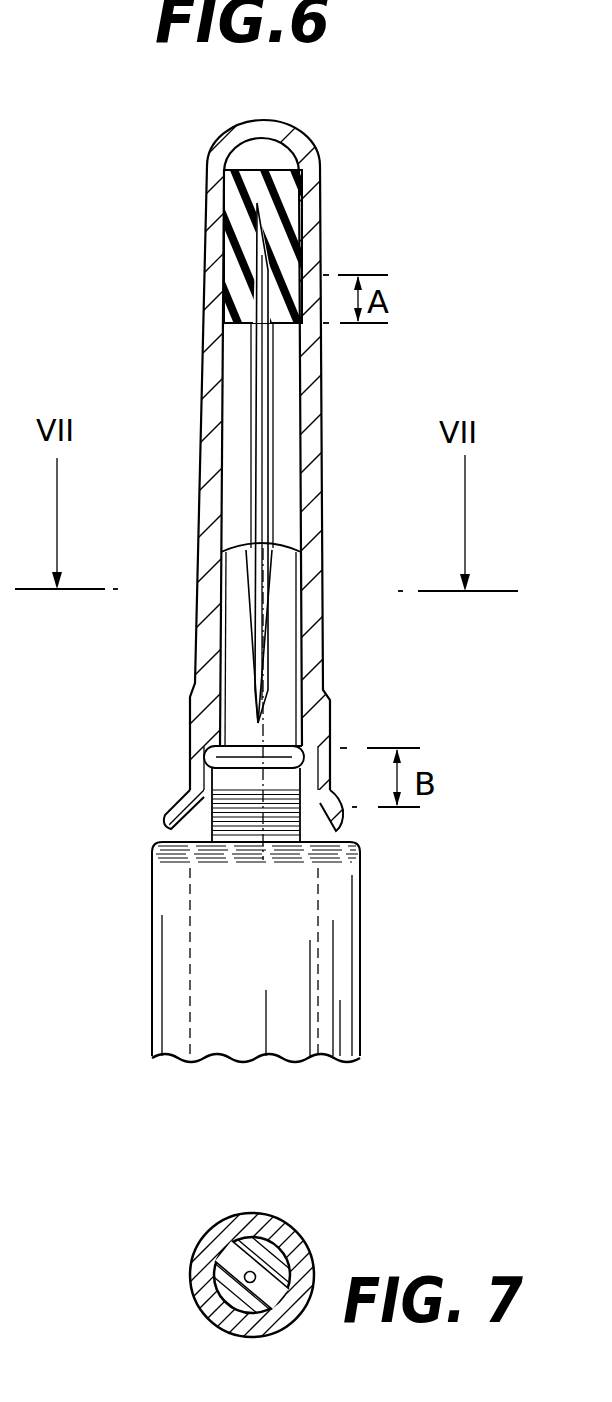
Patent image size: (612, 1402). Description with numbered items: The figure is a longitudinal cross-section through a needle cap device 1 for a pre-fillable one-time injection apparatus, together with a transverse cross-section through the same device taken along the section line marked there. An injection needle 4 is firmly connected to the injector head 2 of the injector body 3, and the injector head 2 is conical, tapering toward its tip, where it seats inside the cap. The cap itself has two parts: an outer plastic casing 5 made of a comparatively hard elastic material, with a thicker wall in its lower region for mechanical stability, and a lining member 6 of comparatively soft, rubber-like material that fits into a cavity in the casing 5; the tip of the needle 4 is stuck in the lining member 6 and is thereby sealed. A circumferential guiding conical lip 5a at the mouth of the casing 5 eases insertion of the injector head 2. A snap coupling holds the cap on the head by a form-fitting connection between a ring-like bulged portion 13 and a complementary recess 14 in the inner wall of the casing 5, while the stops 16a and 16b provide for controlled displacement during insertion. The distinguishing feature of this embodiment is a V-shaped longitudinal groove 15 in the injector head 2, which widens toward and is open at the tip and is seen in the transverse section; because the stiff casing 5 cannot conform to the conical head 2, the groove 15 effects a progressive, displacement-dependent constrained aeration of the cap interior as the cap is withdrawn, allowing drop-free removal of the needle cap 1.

In FIG. 6, the needle cap device 1 is at (157, 150).
In FIG. 6, the injector head 2 is at (232, 637).
In FIG. 7, the injector head 2 is at (233, 1253).
In FIG. 6, the injector body 3 is at (183, 980).
In FIG. 6, the injection needle 4 is at (253, 375).
In FIG. 6, the outer plastic casing 5 is at (202, 453).
In FIG. 7, the outer plastic casing 5 is at (280, 1232).
In FIG. 6, the circumferential guiding conical lip 5a is at (190, 797).
In FIG. 6, the lining member 6 is at (295, 175).
In FIG. 6, the ring-like bulged portion 13 is at (300, 745).
In FIG. 6, the complementary recess 14 is at (210, 750).
In FIG. 6, the V-shaped longitudinal groove 15 is at (272, 540).
In FIG. 7, the V-shaped longitudinal groove 15 is at (220, 1328).
In FIG. 6, the stop 16a is at (208, 752).
In FIG. 6, the stop 16b is at (165, 833).